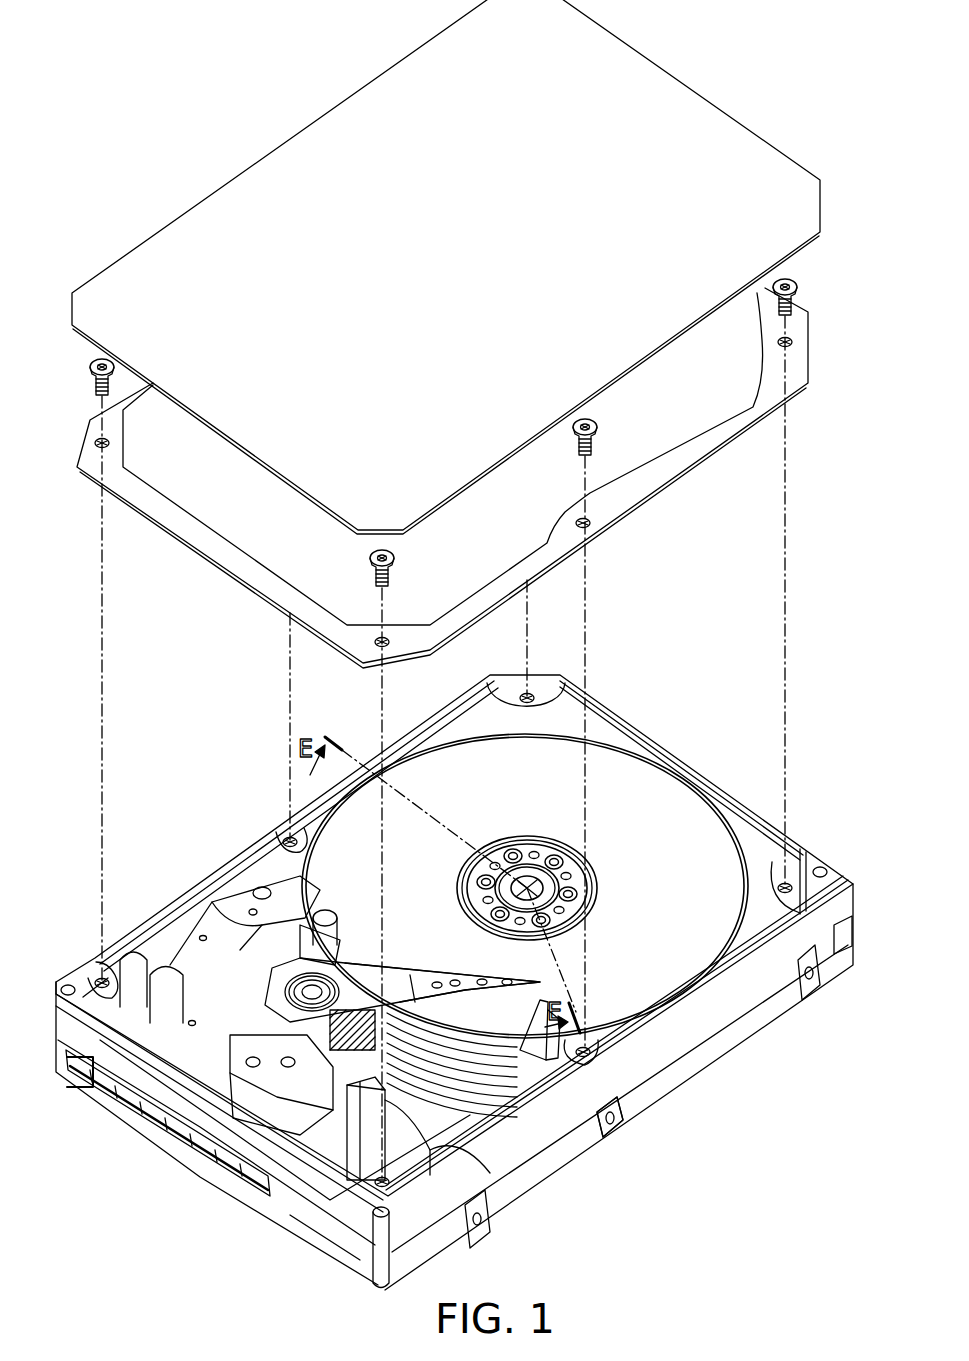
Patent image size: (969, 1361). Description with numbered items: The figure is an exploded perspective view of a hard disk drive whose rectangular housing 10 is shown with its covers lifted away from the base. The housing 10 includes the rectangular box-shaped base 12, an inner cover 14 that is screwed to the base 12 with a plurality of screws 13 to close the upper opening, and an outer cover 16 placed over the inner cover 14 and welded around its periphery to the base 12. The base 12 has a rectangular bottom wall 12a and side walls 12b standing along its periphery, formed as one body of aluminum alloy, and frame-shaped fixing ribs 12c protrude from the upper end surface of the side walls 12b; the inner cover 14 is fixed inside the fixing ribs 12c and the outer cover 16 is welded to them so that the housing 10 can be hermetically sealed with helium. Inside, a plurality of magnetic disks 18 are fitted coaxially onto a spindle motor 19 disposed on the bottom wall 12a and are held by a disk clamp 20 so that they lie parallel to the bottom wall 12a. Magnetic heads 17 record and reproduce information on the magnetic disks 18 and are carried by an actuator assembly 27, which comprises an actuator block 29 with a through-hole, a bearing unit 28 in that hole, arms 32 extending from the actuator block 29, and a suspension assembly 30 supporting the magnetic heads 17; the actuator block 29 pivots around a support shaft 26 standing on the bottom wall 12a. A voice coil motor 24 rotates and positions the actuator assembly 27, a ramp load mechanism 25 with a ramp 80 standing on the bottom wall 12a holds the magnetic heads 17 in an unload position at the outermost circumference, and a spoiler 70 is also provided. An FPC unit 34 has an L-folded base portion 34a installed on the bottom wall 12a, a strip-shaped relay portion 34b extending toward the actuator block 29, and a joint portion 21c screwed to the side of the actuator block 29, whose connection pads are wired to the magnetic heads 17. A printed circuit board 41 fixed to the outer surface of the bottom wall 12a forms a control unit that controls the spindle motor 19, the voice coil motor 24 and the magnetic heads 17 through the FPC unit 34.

The housing 10 is at (198, 704).
The base 12 is at (684, 1083).
The bottom wall 12a is at (523, 1100).
The side walls 12b is at (150, 1085).
The fixing ribs 12c is at (230, 853).
The screws 13 is at (90, 363).
The inner cover 14 is at (652, 483).
The outer cover 16 is at (693, 116).
The magnetic heads 17 is at (523, 993).
The magnetic disks 18 is at (673, 800).
The spindle motor 19 is at (537, 853).
The disk clamp 20 is at (493, 860).
The joint portion 21c is at (302, 1039).
The voice coil motor 24 is at (190, 955).
The ramp load mechanism 25 is at (536, 1026).
The support shaft 26 is at (303, 966).
The actuator assembly 27 is at (402, 953).
The bearing unit 28 is at (280, 970).
The actuator block 29 is at (320, 927).
The suspension assembly 30 is at (494, 957).
The arms 32 is at (422, 982).
The FPC unit 34 is at (358, 1164).
The base portion 34a is at (367, 1128).
The relay portion 34b is at (490, 1174).
The printed circuit board 41 is at (323, 1258).
The spoiler 70 is at (325, 913).
The ramp 80 is at (597, 1137).